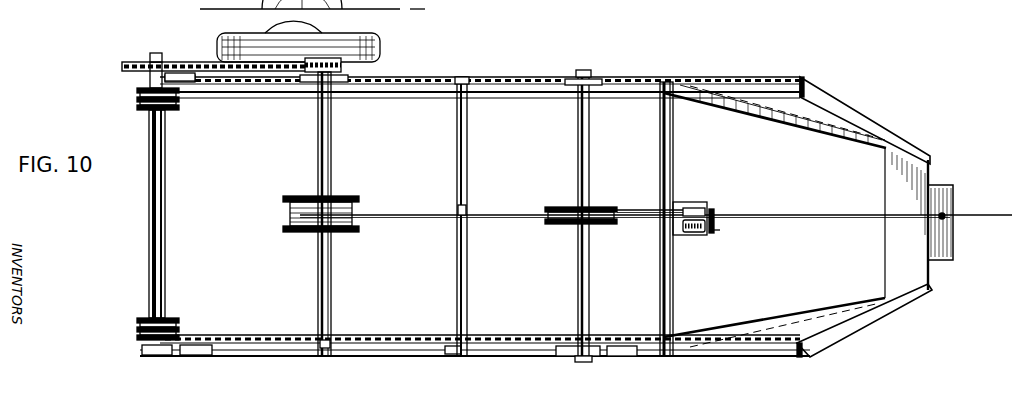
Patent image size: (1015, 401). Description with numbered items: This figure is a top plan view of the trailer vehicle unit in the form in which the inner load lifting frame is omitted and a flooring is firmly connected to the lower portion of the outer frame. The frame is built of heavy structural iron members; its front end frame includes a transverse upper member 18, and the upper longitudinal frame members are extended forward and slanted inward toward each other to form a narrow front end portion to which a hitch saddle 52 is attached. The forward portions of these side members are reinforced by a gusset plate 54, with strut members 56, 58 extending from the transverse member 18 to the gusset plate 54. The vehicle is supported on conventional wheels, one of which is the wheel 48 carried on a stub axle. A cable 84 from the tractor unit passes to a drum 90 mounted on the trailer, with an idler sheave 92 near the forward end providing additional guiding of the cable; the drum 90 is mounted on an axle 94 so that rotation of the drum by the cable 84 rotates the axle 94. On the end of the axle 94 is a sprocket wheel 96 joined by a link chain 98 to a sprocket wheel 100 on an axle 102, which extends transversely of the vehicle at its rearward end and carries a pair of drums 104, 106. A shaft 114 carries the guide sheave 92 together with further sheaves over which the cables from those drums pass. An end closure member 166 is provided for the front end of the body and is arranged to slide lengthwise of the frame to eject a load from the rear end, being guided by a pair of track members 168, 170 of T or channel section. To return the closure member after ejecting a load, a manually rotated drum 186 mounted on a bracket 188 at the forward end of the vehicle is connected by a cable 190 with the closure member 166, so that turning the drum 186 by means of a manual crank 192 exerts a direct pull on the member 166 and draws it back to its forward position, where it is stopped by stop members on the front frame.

The transverse upper member 18 is at (674, 141).
The wheel 48 is at (380, 42).
The hitch saddle 52 is at (944, 218).
The gusset plate 54 is at (886, 190).
The strut member 56 is at (805, 316).
The strut member 58 is at (816, 130).
The cable 84 is at (842, 215).
The drum 90 is at (348, 232).
The idler sheave 92 is at (604, 224).
The axle 94 is at (319, 141).
The sprocket wheel 96 is at (345, 70).
The link chain 98 is at (208, 62).
The sprocket wheel 100 is at (150, 62).
The axle 102 is at (150, 232).
The drum 104 is at (137, 96).
The drum 106 is at (137, 327).
The shaft 114 is at (578, 143).
The end closure member 166 is at (458, 143).
The track member 168 is at (266, 97).
The track member 170 is at (260, 333).
The manually rotated drum 186 is at (700, 208).
The bracket 188 is at (684, 236).
The cable 190 is at (638, 205).
The manual crank 192 is at (719, 231).